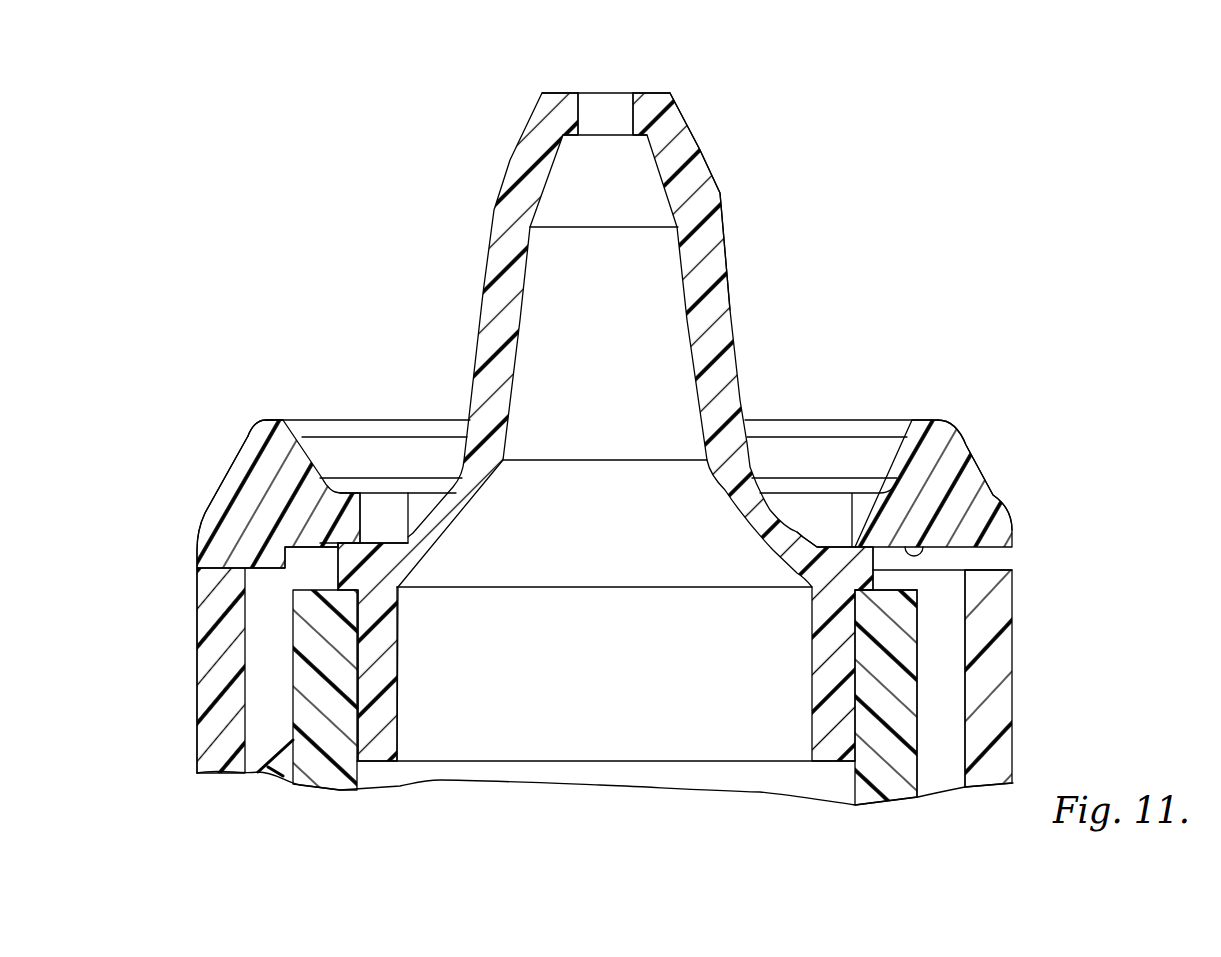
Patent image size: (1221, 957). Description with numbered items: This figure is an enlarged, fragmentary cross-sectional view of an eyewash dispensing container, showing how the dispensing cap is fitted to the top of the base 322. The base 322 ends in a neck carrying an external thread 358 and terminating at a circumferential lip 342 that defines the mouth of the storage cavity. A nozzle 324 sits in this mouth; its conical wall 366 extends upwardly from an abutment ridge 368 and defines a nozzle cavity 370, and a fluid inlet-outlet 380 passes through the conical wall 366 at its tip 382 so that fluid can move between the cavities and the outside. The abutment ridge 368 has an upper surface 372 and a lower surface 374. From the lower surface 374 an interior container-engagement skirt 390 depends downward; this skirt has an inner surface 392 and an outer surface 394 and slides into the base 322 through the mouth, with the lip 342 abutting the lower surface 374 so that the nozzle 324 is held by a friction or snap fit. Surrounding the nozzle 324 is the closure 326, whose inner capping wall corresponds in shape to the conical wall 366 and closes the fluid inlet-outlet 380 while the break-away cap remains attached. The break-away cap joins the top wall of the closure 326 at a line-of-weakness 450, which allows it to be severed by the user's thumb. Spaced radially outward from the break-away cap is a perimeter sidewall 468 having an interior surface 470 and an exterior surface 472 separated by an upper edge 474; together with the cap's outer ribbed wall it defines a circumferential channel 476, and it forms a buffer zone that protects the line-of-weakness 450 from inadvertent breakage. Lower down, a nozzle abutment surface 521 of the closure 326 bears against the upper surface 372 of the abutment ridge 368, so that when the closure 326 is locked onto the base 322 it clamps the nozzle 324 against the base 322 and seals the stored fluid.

The base 322 is at (922, 674).
The nozzle 324 is at (740, 353).
The closure 326 is at (1001, 498).
The circumferential lip 342 is at (913, 586).
The external thread 358 is at (277, 770).
The conical wall 366 is at (717, 185).
The abutment ridge 368 is at (877, 560).
The nozzle cavity 370 is at (657, 310).
The upper surface 372 is at (818, 545).
The lower surface 374 is at (867, 593).
The fluid inlet-outlet 380 is at (602, 115).
The tip 382 is at (557, 93).
The interior container-engagement skirt 390 is at (812, 708).
The inner surface 392 is at (400, 678).
The outer surface 394 is at (355, 655).
The line-of-weakness 450 is at (400, 490).
The perimeter sidewall 468 is at (968, 449).
The interior surface 470 is at (330, 458).
The exterior surface 472 is at (225, 485).
The upper edge 474 is at (263, 418).
The circumferential channel 476 is at (830, 515).
The nozzle abutment surface 521 is at (920, 548).